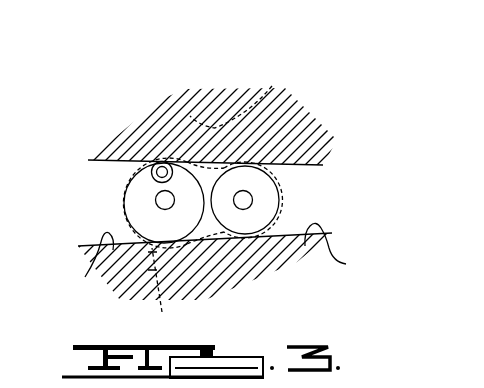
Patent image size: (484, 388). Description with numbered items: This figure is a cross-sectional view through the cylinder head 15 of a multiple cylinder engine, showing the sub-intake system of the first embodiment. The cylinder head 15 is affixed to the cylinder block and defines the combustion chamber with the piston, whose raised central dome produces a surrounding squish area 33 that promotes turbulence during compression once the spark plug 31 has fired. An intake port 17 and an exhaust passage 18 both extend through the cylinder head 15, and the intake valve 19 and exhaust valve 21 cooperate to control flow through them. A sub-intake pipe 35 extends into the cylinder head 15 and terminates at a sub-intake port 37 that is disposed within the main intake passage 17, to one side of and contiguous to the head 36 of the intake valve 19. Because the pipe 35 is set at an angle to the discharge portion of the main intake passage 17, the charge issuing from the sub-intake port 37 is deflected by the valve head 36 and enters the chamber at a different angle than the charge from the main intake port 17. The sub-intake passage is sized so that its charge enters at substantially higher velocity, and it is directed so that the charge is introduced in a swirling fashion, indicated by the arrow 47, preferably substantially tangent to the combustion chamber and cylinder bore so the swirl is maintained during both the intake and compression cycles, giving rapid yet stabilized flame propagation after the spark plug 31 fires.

The cylinder head 15 is at (336, 114).
The intake port 17 is at (85, 277).
The exhaust passage 18 is at (346, 264).
The intake valve 19 is at (157, 203).
The exhaust valve 21 is at (252, 198).
The spark plug 31 is at (248, 101).
The squish area 33 is at (157, 294).
The sub-intake pipe 35 is at (127, 170).
The intake valve head 36 is at (132, 184).
The sub-intake port 37 is at (160, 162).
The swirling direction arrow 47 is at (228, 153).